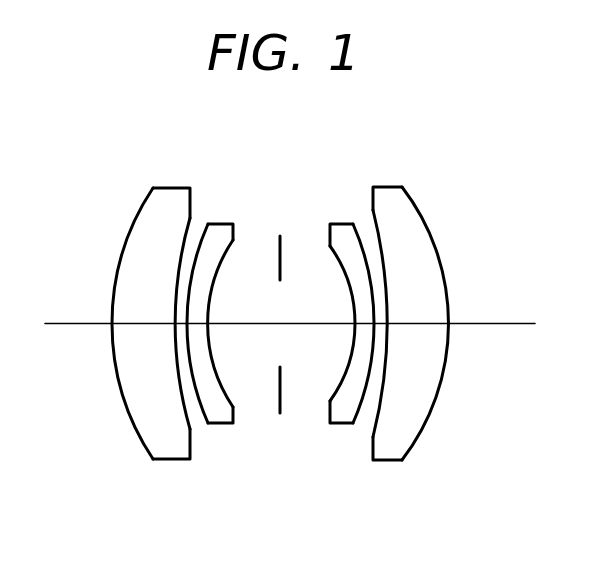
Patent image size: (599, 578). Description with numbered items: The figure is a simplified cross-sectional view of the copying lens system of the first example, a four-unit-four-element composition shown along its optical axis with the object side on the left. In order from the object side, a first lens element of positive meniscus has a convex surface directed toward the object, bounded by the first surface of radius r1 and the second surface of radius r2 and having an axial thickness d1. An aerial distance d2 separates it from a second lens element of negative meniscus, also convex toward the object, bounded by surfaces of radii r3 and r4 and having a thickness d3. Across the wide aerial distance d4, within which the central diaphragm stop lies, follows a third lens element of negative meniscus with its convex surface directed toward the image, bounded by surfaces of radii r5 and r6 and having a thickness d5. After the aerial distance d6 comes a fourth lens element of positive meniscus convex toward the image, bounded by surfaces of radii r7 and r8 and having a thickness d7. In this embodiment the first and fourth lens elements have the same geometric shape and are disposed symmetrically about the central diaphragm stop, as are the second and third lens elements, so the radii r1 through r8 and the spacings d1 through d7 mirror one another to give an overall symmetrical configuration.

The first lens surface radius of curvature r1 is at (143, 203).
The second lens surface radius of curvature r2 is at (188, 219).
The third lens surface radius of curvature r3 is at (205, 230).
The fourth lens surface radius of curvature r4 is at (230, 250).
The fifth lens surface radius of curvature r5 is at (336, 255).
The sixth lens surface radius of curvature r6 is at (355, 226).
The seventh lens surface radius of curvature r7 is at (375, 214).
The eighth lens surface radius of curvature r8 is at (420, 213).
The first lens element thickness d1 is at (152, 324).
The aerial distance between first and second lens elements d2 is at (181, 324).
The second lens element thickness d3 is at (197, 324).
The aerial distance between second and third lens elements d4 is at (303, 324).
The third lens element thickness d5 is at (363, 324).
The aerial distance between third and fourth lens elements d6 is at (380, 324).
The fourth lens element thickness d7 is at (418, 324).